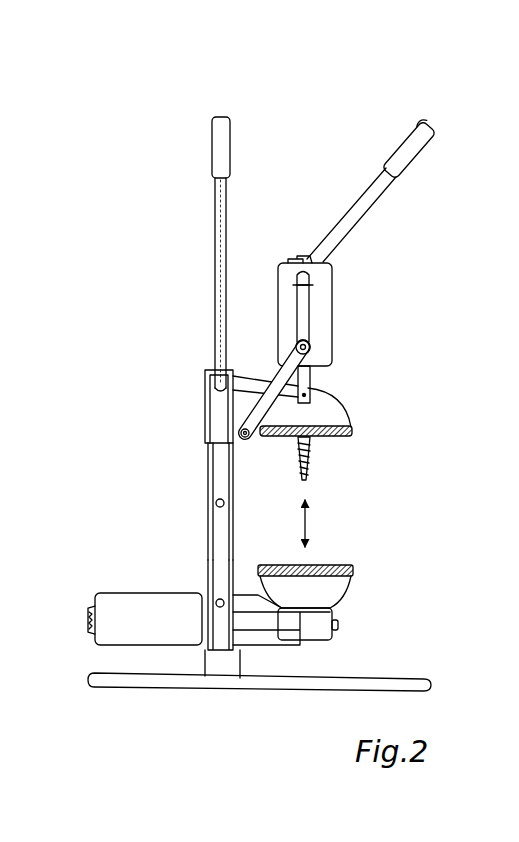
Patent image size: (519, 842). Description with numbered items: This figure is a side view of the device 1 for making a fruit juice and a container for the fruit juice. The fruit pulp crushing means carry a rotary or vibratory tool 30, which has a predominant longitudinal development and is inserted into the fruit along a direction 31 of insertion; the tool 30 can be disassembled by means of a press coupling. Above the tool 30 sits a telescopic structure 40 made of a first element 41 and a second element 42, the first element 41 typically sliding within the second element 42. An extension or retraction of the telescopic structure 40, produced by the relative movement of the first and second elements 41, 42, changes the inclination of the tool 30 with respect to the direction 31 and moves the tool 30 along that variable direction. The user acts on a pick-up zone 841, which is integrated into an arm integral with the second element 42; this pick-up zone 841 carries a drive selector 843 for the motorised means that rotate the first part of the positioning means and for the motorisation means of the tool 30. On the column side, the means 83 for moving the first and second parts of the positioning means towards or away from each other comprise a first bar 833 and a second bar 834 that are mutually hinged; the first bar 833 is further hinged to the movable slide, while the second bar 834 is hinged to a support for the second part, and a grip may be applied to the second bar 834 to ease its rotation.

The device 1 is at (343, 145).
The rotary or vibratory tool 30 is at (321, 463).
The direction of insertion 31 is at (313, 525).
The telescopic structure 40 is at (314, 377).
The first element 41 is at (318, 388).
The second element 42 is at (313, 300).
The means for moving the first and second part towards/away from each other 83 is at (204, 326).
The first bar 833 is at (206, 559).
The second bar 834 is at (205, 458).
The pick-up zone 841 is at (419, 168).
The drive selector 843 is at (403, 122).